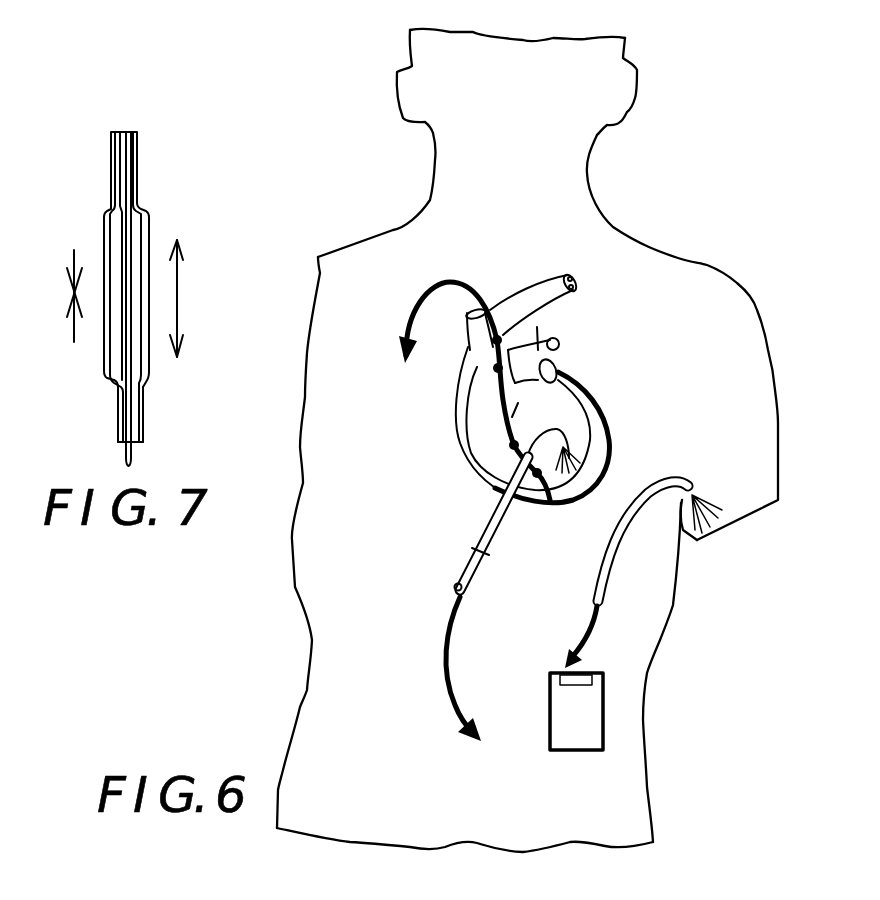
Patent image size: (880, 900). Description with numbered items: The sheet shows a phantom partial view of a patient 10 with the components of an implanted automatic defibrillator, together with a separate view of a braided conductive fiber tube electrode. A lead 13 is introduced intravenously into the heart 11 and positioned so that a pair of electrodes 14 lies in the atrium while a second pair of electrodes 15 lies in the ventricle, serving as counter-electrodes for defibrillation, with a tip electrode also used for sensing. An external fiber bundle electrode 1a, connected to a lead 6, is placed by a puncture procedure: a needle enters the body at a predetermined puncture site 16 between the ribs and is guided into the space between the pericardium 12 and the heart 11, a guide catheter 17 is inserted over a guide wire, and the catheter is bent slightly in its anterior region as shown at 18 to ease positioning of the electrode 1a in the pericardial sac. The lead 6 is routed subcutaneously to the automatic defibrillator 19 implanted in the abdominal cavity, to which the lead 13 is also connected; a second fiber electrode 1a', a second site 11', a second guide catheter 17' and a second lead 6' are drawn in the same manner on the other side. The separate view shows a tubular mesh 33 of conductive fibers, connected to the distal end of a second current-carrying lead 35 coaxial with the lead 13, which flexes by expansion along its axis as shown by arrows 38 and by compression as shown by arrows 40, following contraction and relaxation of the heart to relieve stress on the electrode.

In FIG. 6, the patient 10 is at (655, 248).
In FIG. 6, the heart 11 is at (544, 385).
In FIG. 6, the pericardium 12 is at (597, 403).
In FIG. 7, the lead 13 is at (124, 131).
In FIG. 6, the lead 13 is at (457, 283).
In FIG. 6, the pair of electrodes 14 is at (495, 341).
In FIG. 6, the second pair of electrodes 15 is at (497, 460).
In FIG. 6, the puncture site 16 is at (485, 556).
In FIG. 6, the guide catheter 17 is at (425, 590).
In FIG. 6, the bent anterior region of catheter 18 is at (538, 473).
In FIG. 6, the automatic defibrillator 19 is at (675, 703).
In FIG. 6, the fiber bundle electrode 1a is at (602, 434).
In FIG. 6, the electrode tip 1a' is at (724, 483).
In FIG. 6, the tissue site 11' is at (741, 537).
In FIG. 6, the introducer tube end 17' is at (672, 551).
In FIG. 6, the lead 6 is at (478, 669).
In FIG. 6, the lead conductor to generator 6' is at (605, 637).
In FIG. 7, the tubular mesh counter-electrode 33 is at (100, 352).
In FIG. 7, the second current-carrying lead 35 is at (111, 186).
In FIG. 7, the expansion arrows 38 is at (177, 297).
In FIG. 7, the compression arrows 40 is at (70, 293).